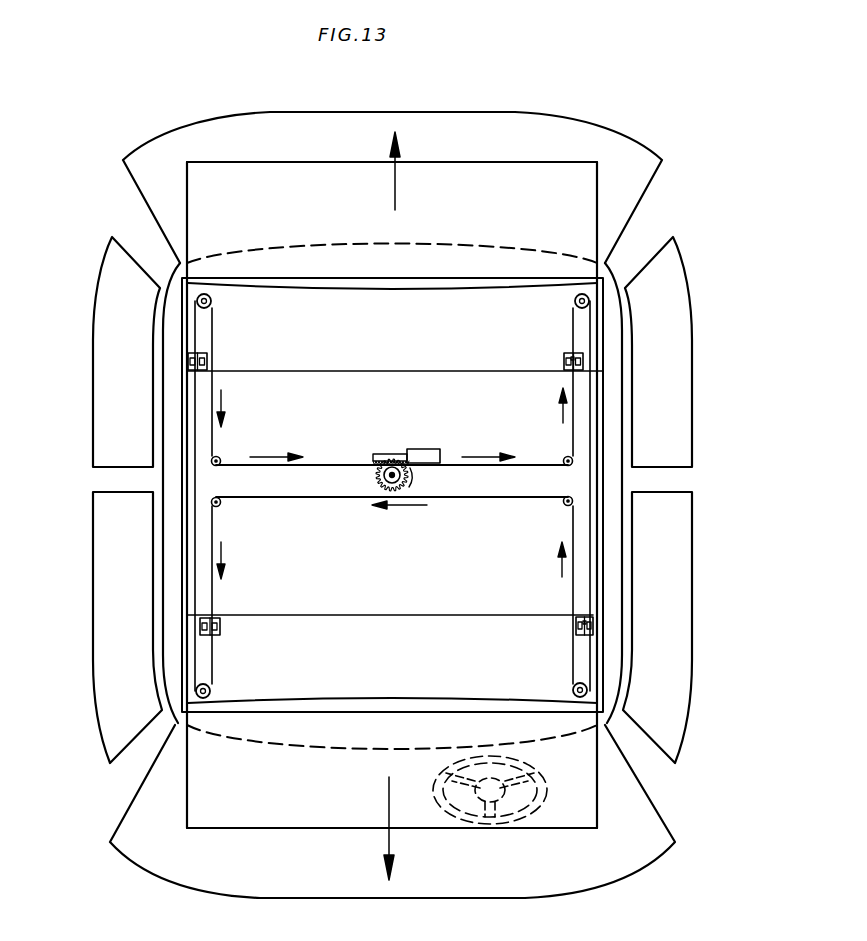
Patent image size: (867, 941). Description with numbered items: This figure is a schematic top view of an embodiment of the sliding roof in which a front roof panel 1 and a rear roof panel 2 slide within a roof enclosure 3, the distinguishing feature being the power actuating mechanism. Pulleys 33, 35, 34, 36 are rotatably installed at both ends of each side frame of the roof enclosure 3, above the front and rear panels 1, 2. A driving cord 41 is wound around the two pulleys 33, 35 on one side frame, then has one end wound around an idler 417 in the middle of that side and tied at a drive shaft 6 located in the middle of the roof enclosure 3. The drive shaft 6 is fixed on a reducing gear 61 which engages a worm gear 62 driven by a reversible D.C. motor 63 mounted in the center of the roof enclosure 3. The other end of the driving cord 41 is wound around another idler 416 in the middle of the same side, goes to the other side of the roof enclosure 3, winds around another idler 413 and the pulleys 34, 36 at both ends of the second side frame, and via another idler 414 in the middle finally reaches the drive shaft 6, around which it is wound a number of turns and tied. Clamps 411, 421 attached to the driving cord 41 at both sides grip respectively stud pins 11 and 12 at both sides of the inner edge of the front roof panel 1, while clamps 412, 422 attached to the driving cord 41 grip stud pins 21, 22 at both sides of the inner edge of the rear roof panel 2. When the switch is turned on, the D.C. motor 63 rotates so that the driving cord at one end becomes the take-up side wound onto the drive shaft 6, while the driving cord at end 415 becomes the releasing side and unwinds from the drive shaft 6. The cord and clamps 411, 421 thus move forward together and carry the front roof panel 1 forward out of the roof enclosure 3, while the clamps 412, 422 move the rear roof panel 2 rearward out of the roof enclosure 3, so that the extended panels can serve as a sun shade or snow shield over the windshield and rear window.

The front roof panel 1 is at (577, 796).
The rear roof panel 2 is at (308, 183).
The roof enclosure 3 is at (182, 537).
The drive shaft 6 is at (384, 471).
The stud pin 11 is at (220, 624).
The stud pin 12 is at (578, 627).
The stud pin 21 is at (208, 360).
The stud pin 22 is at (565, 363).
The pulley 33 is at (196, 693).
The pulley 34 is at (587, 690).
The pulley 35 is at (198, 298).
The pulley 36 is at (586, 298).
The driving cord 41 is at (318, 465).
The reducing gear 61 is at (381, 487).
The worm gear 62 is at (390, 453).
The reversible D.C. motor 63 is at (428, 449).
The clamp 411 is at (200, 630).
The clamp 412 is at (188, 369).
The idler 413 is at (573, 499).
The idler 414 is at (573, 460).
The driving cord end 415 is at (481, 463).
The idler 416 is at (211, 500).
The idler 417 is at (211, 461).
The clamp 421 is at (593, 619).
The clamp 422 is at (583, 357).